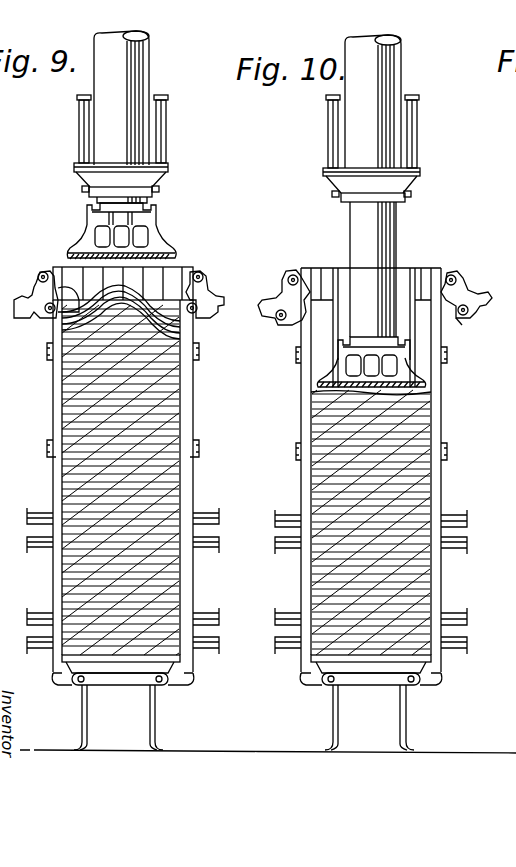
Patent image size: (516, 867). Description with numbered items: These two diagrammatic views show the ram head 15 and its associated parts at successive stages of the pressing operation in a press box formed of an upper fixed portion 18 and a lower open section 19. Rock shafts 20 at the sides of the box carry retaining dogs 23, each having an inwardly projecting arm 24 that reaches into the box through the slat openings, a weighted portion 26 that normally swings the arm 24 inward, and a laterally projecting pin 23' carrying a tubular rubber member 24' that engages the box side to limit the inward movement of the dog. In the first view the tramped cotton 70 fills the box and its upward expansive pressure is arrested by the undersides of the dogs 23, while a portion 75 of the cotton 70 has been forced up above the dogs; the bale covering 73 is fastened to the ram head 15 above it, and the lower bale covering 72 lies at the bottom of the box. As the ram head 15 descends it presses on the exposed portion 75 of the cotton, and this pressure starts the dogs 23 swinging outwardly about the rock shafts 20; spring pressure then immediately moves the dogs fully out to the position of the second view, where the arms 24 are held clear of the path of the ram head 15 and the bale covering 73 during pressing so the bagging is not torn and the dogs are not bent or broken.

In FIG. 9, the ram head 15 is at (170, 250).
In FIG. 10, the ram head 15 is at (425, 383).
In FIG. 9, the upper fixed portion 18 is at (183, 393).
In FIG. 10, the upper fixed portion 18 is at (438, 437).
In FIG. 9, the lower open section 19 is at (185, 577).
In FIG. 10, the lower open section 19 is at (438, 501).
In FIG. 9, the rock shaft 20 is at (42, 272).
In FIG. 10, the rock shaft 20 is at (456, 277).
In FIG. 9, the retaining dog 23 is at (30, 290).
In FIG. 10, the retaining dog 23 is at (478, 289).
In FIG. 10, the laterally projecting pin 23' is at (474, 335).
In FIG. 9, the inwardly projecting arm 24 is at (64, 268).
In FIG. 10, the inwardly projecting arm 24 is at (284, 312).
In FIG. 9, the tubular rubber member 24' is at (122, 322).
In FIG. 10, the tubular rubber member 24' is at (484, 317).
In FIG. 9, the weighted portion 26 is at (228, 285).
In FIG. 9, the cotton 70 is at (178, 340).
In FIG. 10, the cotton 70 is at (422, 417).
In FIG. 9, the lower bale covering 72 is at (180, 670).
In FIG. 10, the lower bale covering 72 is at (428, 670).
In FIG. 9, the bale covering 73 is at (173, 257).
In FIG. 9, the portion of the cotton 75 is at (128, 290).